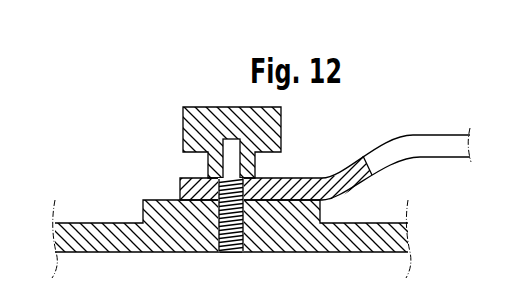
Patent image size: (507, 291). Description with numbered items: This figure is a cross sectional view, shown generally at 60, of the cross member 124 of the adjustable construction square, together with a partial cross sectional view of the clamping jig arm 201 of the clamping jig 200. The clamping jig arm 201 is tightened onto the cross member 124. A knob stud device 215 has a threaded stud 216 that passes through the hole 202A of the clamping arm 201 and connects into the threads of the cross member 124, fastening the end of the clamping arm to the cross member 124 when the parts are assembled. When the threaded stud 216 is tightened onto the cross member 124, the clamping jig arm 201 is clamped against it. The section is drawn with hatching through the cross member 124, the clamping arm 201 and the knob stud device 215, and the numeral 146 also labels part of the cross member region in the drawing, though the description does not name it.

The cross sectional view 60 is at (369, 79).
The cross member 124 is at (112, 222).
The base portion 146 is at (365, 245).
The clamping jig 200 is at (419, 131).
The clamping jig arm 201 is at (420, 159).
The hole 202A is at (250, 184).
The knob stud device 215 is at (208, 108).
The threaded stud 216 is at (228, 253).